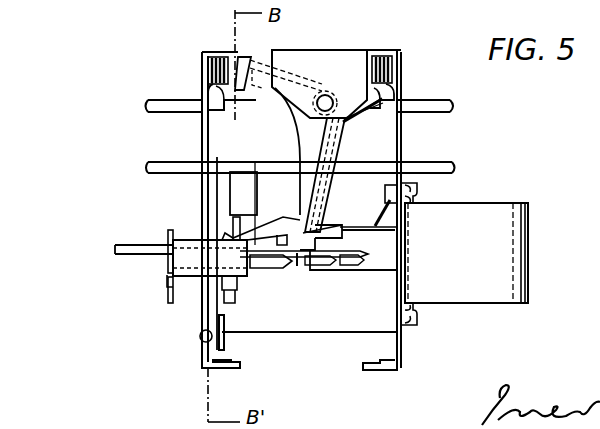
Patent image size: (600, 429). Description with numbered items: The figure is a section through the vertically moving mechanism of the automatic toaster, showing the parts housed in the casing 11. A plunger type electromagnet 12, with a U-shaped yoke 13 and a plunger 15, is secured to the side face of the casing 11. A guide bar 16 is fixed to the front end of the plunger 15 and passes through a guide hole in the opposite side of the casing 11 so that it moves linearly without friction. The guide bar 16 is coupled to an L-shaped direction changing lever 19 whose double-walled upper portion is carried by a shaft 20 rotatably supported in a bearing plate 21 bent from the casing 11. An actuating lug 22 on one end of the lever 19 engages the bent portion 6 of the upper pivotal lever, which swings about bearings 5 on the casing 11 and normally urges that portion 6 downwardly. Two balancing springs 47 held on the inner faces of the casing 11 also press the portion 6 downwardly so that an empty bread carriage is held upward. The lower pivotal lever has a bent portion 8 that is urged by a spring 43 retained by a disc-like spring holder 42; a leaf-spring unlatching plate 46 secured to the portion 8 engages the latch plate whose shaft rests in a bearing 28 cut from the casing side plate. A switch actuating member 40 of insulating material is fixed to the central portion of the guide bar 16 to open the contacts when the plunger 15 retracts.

The bearing 5 is at (400, 97).
The portion of pivotal lever 6 is at (250, 98).
The bent portion of lever 8 is at (418, 166).
The casing 11 is at (206, 290).
The electromagnet 12 is at (451, 300).
The yoke 13 is at (484, 300).
The plunger 15 is at (381, 260).
The guide bar 16 is at (137, 256).
The L-shaped direction changing lever 19 is at (270, 100).
The shaft 20 is at (326, 94).
The bearing plate 21 is at (362, 50).
The actuating lug 22 is at (247, 57).
The bearing 28 is at (345, 275).
The switch actuating member 40 is at (270, 265).
The spring holder 42 is at (226, 344).
The spring 43 is at (200, 338).
The unlatching plate 46 is at (237, 196).
The balancing spring 47 is at (215, 58).